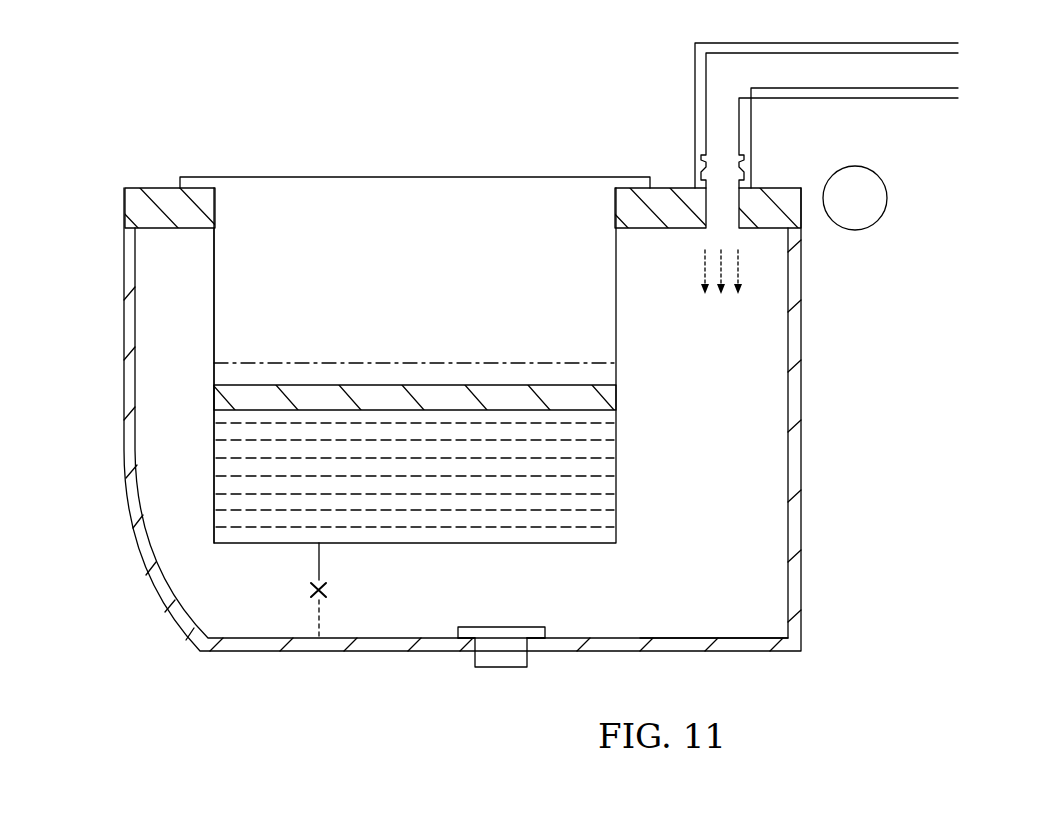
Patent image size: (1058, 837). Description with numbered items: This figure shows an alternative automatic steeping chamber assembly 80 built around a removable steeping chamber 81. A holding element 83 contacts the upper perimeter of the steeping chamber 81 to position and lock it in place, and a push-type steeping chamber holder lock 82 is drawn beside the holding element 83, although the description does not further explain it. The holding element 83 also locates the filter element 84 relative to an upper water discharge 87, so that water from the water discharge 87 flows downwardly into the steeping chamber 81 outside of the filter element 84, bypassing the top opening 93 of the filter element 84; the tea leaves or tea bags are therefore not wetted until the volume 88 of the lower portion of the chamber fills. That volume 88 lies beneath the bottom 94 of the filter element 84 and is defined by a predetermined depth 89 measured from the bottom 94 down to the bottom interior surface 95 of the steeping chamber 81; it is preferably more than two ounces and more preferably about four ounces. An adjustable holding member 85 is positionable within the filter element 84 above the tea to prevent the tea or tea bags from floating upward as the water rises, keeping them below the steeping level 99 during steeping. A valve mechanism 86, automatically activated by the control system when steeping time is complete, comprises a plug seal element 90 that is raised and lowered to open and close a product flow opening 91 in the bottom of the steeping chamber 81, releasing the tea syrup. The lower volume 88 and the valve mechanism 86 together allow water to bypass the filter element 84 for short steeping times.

The automatic steeping chamber assembly 80 is at (333, 63).
The removable steeping chamber 81 is at (803, 453).
The steeping chamber holder lock 82 is at (862, 231).
The holding element 83 is at (668, 198).
The filter element 84 is at (210, 340).
The adjustable holding member 85 is at (500, 393).
The valve mechanism 86 is at (500, 670).
The upper water discharge 87 is at (721, 166).
The volume of the lower portion of the steeping chamber 88 is at (510, 598).
The predetermined depth 89 is at (310, 592).
The plug seal element 90 is at (484, 660).
The product flow opening 91 is at (518, 656).
The top opening of the filter element 93 is at (413, 173).
The bottom of the filter element 94 is at (413, 547).
The bottom interior surface of the steeping chamber 95 is at (675, 637).
The steeping level 99 is at (348, 362).